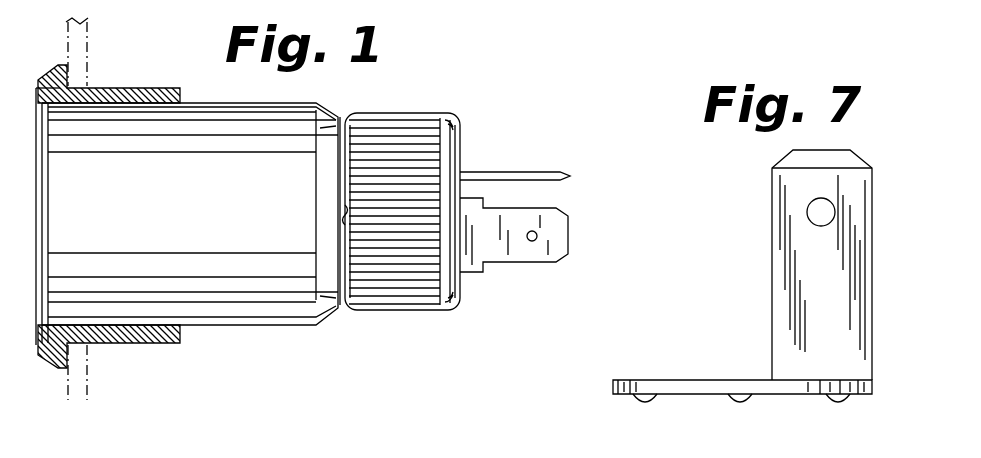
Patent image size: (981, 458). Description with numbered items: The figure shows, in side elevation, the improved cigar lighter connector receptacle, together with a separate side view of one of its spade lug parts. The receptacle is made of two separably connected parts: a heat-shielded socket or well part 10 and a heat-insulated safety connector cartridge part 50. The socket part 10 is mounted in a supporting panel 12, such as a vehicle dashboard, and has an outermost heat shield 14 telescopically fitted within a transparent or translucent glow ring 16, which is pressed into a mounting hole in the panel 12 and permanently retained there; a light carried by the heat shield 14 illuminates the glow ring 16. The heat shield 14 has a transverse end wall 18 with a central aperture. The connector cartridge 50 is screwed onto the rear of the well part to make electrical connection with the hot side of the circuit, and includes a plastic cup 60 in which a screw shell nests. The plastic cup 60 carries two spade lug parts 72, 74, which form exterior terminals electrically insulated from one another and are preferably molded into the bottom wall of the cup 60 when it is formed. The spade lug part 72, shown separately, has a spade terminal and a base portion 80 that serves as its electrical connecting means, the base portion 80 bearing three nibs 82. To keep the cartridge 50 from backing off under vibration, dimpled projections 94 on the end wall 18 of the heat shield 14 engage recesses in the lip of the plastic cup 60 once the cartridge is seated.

In FIG. 1, the socket part 10 is at (303, 212).
In FIG. 1, the supporting panel 12 is at (80, 71).
In FIG. 1, the heat shield 14 is at (237, 308).
In FIG. 1, the glow ring 16 is at (137, 344).
In FIG. 1, the transverse end wall 18 is at (340, 188).
In FIG. 1, the safety connector cartridge part 50 is at (413, 326).
In FIG. 1, the plastic cup 60 is at (456, 130).
In FIG. 1, the spade lug part 72 is at (540, 172).
In FIG. 7, the spade lug part 72 is at (782, 345).
In FIG. 1, the spade lug part 74 is at (505, 252).
In FIG. 7, the base portion 80 is at (697, 364).
In FIG. 7, the nibs 82 is at (838, 418).
In FIG. 1, the projections 94 is at (344, 214).